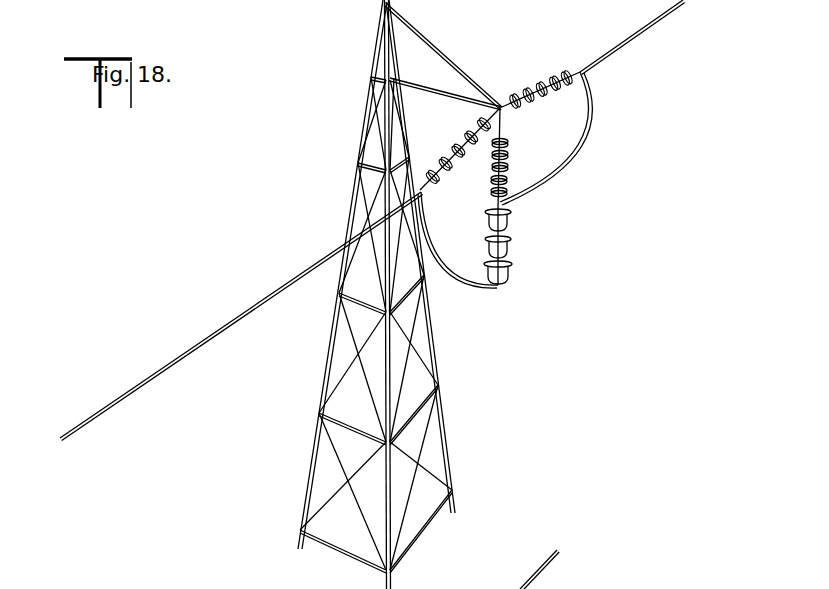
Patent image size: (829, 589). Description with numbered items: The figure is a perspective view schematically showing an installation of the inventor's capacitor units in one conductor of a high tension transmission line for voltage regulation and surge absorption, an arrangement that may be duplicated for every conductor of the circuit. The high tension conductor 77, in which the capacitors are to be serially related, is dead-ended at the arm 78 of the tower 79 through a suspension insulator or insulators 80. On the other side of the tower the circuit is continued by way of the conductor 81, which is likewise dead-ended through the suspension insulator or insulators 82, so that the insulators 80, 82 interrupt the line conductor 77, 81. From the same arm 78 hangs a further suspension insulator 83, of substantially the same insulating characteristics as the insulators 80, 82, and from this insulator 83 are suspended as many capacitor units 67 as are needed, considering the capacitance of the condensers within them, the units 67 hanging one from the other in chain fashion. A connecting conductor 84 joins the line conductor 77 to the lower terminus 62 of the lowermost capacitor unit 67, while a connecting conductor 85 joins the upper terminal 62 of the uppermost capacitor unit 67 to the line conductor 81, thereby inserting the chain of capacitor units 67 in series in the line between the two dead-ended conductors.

The terminal 62 is at (487, 212).
The capacitor unit 67 is at (508, 222).
The high tension conductor 77 is at (255, 316).
The arm 78 is at (432, 45).
The tower 79 is at (447, 394).
The suspension insulator 80 is at (468, 146).
The conductor 81 is at (658, 22).
The suspension insulator 82 is at (528, 92).
The suspension insulator 83 is at (508, 167).
The connecting conductor 84 is at (463, 277).
The connecting conductor 85 is at (585, 126).